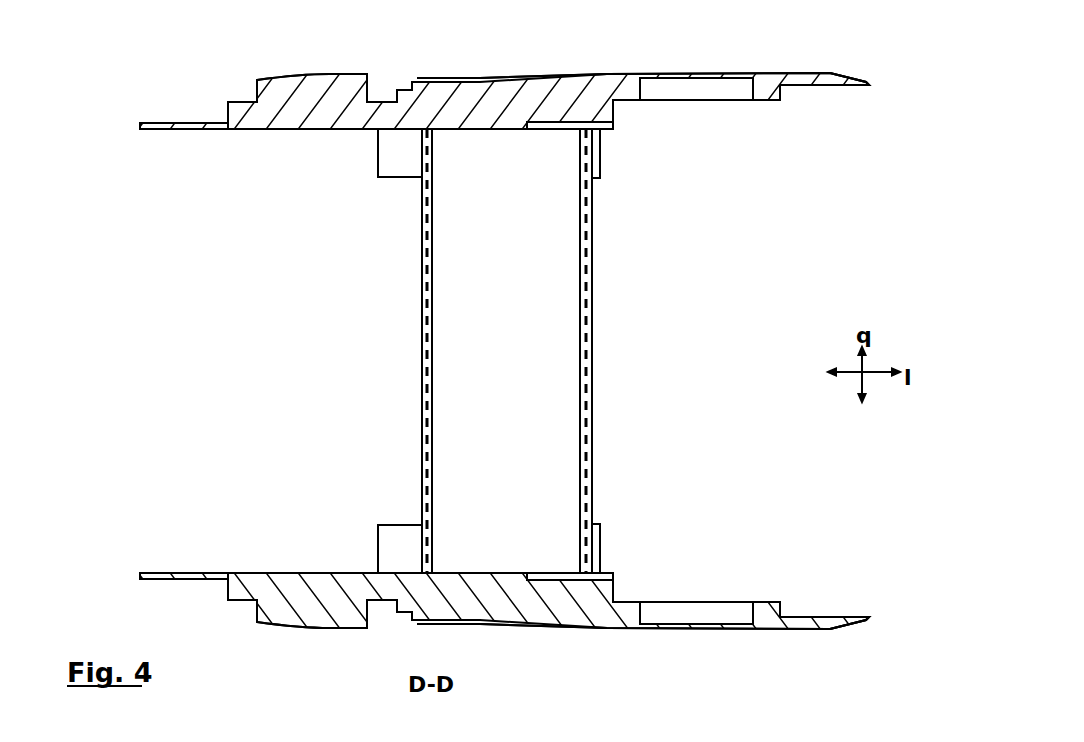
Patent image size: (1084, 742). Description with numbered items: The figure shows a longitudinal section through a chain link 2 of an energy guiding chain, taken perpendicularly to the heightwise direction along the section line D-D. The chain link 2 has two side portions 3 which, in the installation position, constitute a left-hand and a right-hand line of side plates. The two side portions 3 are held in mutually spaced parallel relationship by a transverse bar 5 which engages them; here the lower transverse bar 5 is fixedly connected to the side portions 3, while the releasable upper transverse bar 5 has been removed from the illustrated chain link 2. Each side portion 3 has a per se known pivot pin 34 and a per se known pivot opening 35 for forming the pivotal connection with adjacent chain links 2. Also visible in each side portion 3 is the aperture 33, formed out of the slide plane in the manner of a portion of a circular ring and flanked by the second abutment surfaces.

The chain link 2 is at (882, 42).
The side portion 3 is at (868, 80).
The transverse bar 5 is at (518, 437).
The aperture 33 is at (776, 93).
The pivot pin 34 is at (333, 80).
The pivot opening 35 is at (693, 90).